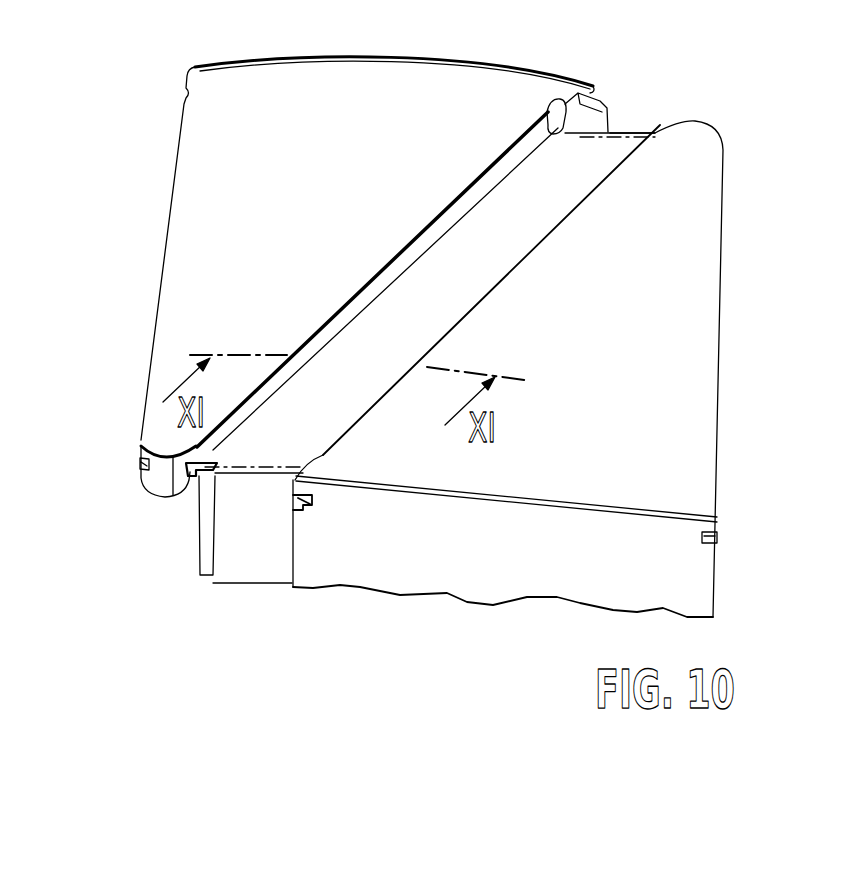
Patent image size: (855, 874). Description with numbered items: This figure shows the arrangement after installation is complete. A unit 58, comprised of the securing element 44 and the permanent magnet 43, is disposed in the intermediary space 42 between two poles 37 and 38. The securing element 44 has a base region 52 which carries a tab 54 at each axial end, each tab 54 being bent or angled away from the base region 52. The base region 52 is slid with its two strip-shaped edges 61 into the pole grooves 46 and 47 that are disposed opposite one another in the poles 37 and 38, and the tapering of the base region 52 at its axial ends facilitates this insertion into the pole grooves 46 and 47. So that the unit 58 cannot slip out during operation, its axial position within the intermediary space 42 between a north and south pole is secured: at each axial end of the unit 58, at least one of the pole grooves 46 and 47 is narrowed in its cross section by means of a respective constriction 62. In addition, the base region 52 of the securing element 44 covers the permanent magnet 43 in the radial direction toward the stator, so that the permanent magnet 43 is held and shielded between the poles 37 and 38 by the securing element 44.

The pole 37 is at (725, 320).
The pole 38 is at (172, 155).
The intermediary space 42 is at (660, 104).
The permanent magnet 43 is at (202, 548).
The securing element 44 is at (340, 305).
The pole groove 46 is at (307, 512).
The pole groove 47 is at (141, 465).
The base region 52 is at (422, 288).
The tab 54 is at (262, 548).
The unit 58 is at (472, 192).
The strip-shaped edge 61 is at (195, 476).
The constriction 62 is at (540, 85).